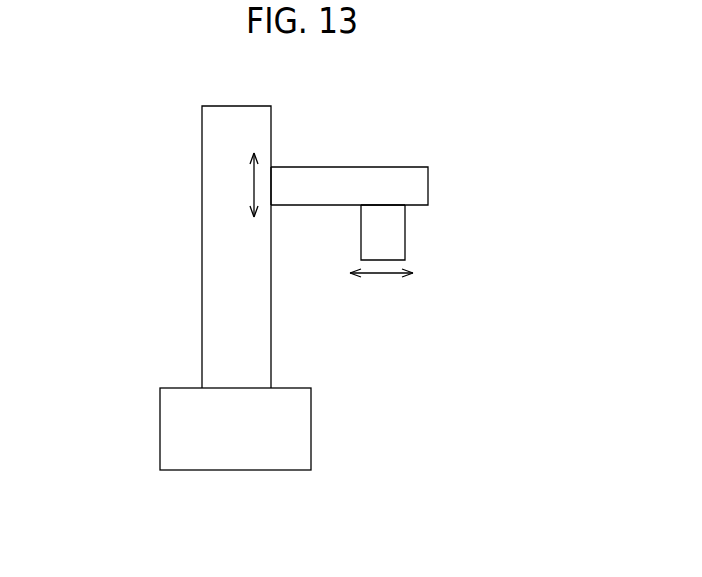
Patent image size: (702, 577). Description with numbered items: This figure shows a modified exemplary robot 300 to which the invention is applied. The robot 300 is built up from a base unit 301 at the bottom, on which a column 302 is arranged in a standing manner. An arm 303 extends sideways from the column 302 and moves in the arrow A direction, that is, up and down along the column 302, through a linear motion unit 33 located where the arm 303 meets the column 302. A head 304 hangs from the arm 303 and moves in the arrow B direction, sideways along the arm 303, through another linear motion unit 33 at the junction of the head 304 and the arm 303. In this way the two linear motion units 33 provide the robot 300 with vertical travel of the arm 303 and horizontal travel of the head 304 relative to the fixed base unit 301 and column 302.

The robot 300 is at (464, 142).
The base unit 301 is at (160, 427).
The column 302 is at (202, 280).
The arm 303 is at (395, 167).
The head 304 is at (406, 238).
The linear motion unit 33 is at (272, 188).